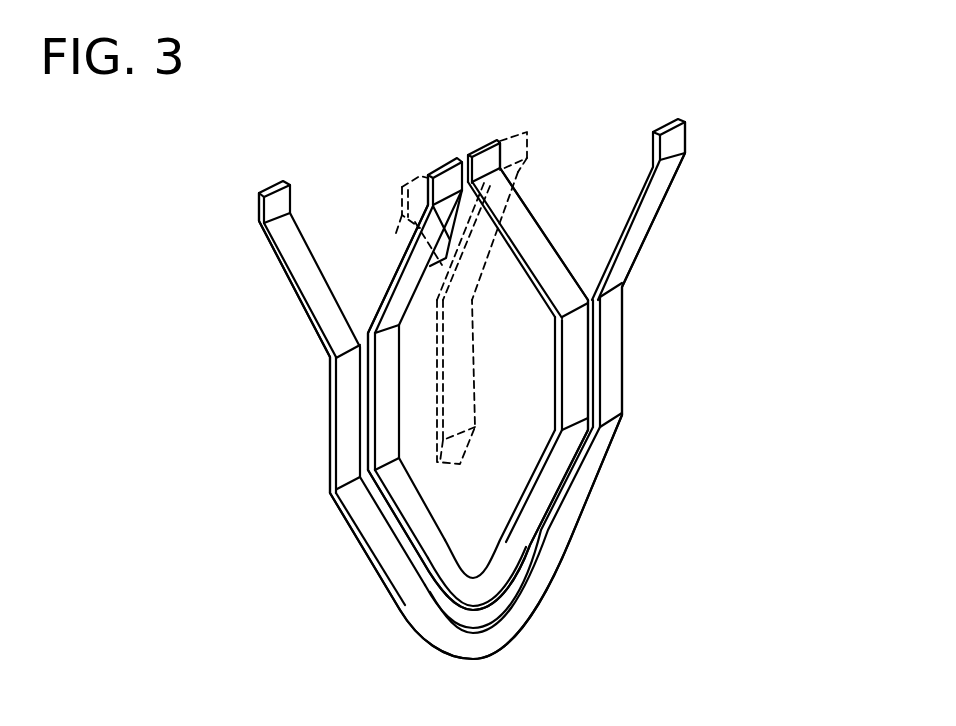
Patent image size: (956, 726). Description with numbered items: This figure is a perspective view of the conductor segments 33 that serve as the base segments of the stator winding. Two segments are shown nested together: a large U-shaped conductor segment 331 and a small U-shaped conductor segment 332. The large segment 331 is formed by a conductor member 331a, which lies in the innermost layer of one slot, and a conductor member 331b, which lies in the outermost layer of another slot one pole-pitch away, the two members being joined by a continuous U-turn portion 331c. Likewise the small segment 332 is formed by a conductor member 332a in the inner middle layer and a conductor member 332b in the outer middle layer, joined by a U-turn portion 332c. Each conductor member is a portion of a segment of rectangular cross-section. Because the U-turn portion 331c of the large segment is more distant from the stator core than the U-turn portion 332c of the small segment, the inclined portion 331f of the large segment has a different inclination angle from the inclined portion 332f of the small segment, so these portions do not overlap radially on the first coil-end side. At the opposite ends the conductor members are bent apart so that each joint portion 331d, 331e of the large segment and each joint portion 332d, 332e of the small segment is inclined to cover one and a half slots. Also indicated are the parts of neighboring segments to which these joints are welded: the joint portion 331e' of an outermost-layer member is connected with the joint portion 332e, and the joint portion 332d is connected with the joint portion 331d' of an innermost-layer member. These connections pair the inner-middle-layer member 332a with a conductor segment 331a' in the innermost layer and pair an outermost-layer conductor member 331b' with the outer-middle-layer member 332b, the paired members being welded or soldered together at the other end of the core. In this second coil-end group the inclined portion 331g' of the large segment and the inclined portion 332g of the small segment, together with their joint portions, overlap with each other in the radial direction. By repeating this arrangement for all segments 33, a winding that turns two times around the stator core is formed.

The conductor segments 33 is at (370, 622).
The large U-shaped conductor segment 331 is at (650, 238).
The conductor member 331a is at (284, 419).
The conductor member 331b is at (680, 355).
The U-turn portion 331c is at (510, 640).
The joint portion 331d is at (262, 269).
The joint portion 331e is at (678, 180).
The inclined portion 331f is at (363, 538).
The joint portion 331d' is at (382, 213).
The conductor segment 331a' is at (372, 237).
The joint portion 331e' is at (561, 144).
The inclined portion 331g' is at (491, 248).
The conductor member 331b' is at (493, 382).
The small U-shaped conductor segment 332 is at (557, 240).
The conductor member 332a is at (382, 433).
The conductor member 332b is at (575, 390).
The U-turn portion 332c is at (492, 592).
The joint portion 332d is at (443, 178).
The joint portion 332e is at (483, 146).
The inclined portion 332f is at (420, 537).
The inclined portion 332g is at (402, 291).